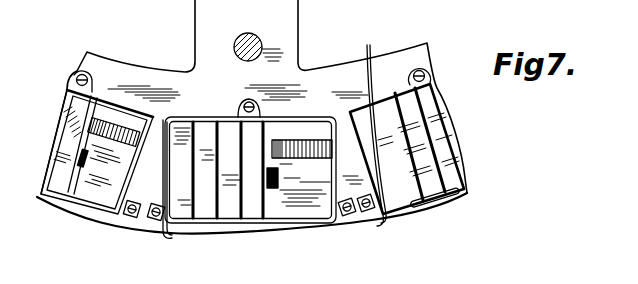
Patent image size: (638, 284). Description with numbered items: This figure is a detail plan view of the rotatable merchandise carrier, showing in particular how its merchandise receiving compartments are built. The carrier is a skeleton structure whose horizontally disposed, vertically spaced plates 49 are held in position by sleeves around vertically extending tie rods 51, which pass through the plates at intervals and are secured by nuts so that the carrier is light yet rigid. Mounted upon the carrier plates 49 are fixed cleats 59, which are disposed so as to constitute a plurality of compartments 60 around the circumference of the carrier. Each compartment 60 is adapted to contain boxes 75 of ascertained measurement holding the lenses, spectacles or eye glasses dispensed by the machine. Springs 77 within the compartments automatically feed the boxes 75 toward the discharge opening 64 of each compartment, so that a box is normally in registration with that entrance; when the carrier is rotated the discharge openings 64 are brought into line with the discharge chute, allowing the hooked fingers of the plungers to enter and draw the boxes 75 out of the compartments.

The carrier plate 49 is at (404, 55).
The tie rod 51 is at (260, 41).
The cleat 59 is at (297, 115).
The compartment 60 is at (100, 202).
The discharge opening 64 is at (192, 228).
The box 75 is at (177, 130).
The spring 77 is at (87, 156).